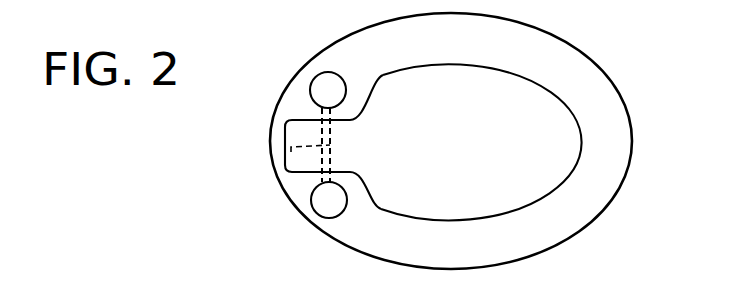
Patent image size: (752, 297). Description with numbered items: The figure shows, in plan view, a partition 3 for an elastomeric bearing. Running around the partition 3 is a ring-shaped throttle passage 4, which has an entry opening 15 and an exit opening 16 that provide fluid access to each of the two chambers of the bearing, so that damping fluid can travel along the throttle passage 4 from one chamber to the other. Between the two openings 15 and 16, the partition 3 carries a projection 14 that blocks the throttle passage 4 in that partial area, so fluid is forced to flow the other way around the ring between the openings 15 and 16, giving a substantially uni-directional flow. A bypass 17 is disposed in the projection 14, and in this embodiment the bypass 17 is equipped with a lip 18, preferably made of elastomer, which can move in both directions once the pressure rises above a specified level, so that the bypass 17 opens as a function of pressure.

The partition 3 is at (560, 132).
The throttle passage 4 is at (610, 163).
The projection 14 is at (296, 125).
The entry opening 15 is at (321, 203).
The exit opening 16 is at (316, 84).
The bypass 17 is at (322, 160).
The lip 18 is at (291, 150).